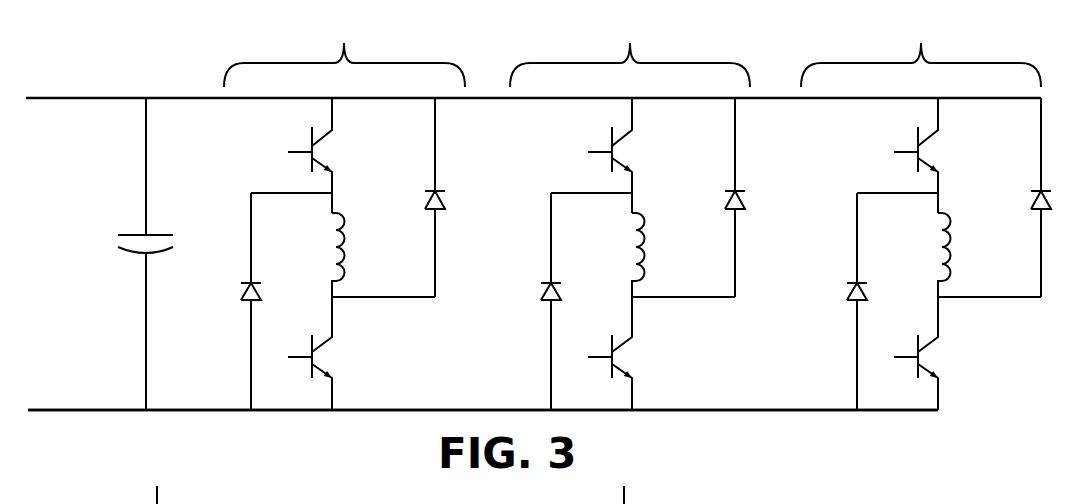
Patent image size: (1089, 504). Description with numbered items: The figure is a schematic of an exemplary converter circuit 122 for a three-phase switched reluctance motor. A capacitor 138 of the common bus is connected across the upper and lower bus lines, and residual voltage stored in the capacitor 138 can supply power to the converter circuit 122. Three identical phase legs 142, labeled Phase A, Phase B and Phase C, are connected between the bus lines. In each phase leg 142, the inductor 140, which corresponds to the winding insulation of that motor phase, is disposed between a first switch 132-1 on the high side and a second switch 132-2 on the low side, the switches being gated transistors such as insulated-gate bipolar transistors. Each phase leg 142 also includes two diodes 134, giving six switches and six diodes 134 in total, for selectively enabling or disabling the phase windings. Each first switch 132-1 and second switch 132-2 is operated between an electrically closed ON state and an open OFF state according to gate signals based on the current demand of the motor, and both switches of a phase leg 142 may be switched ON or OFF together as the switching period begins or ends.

The converter circuit 122 is at (126, 417).
The capacitor 138 is at (140, 234).
The phase leg 142 is at (632, 50).
The first switch 132-1 is at (310, 148).
The second switch 132-2 is at (313, 357).
The inductor 140 is at (334, 268).
The diode 134 is at (250, 283).